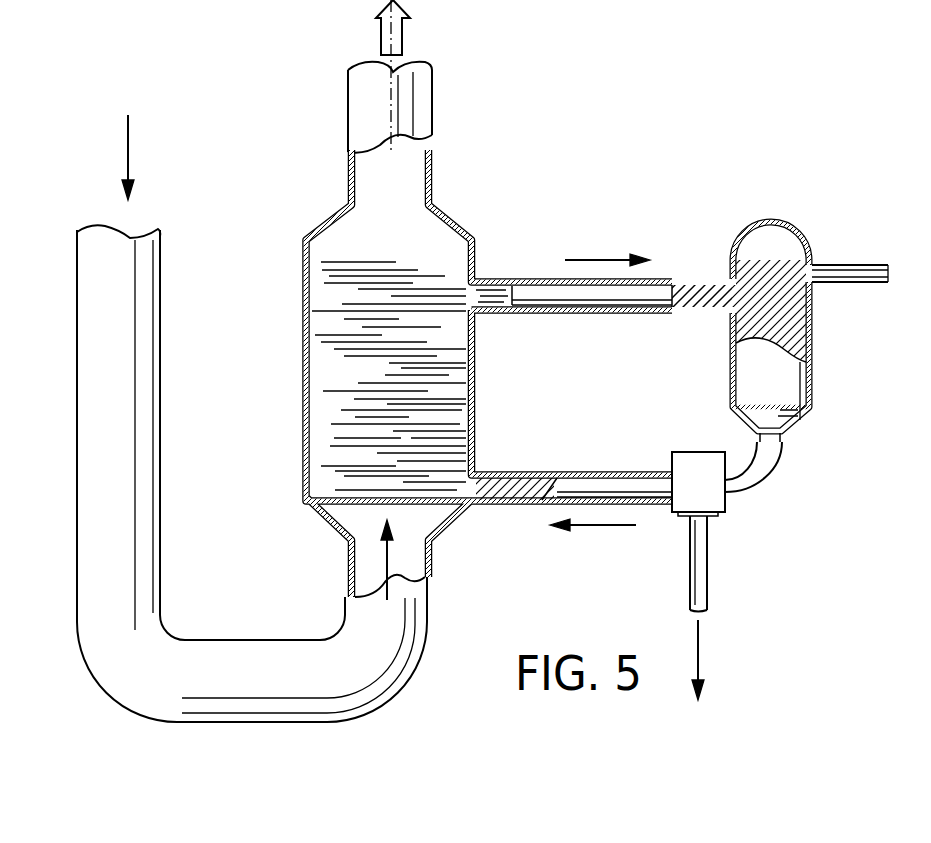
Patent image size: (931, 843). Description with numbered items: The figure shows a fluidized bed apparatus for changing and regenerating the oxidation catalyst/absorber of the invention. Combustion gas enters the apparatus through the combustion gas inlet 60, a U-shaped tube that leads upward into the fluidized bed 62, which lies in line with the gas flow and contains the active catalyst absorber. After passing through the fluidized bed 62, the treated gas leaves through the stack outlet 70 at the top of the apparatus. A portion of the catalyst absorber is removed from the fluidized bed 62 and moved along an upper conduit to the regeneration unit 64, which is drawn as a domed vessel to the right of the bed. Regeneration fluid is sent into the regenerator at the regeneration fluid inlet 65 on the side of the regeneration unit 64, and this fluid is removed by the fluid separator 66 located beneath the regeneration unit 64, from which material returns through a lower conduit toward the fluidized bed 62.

The combustion gas inlet 60 is at (77, 330).
The fluidized bed 62 is at (366, 389).
The regeneration unit 64 is at (773, 395).
The regeneration fluid inlet 65 is at (856, 265).
The fluid separator 66 is at (707, 492).
The stack outlet 70 is at (434, 95).